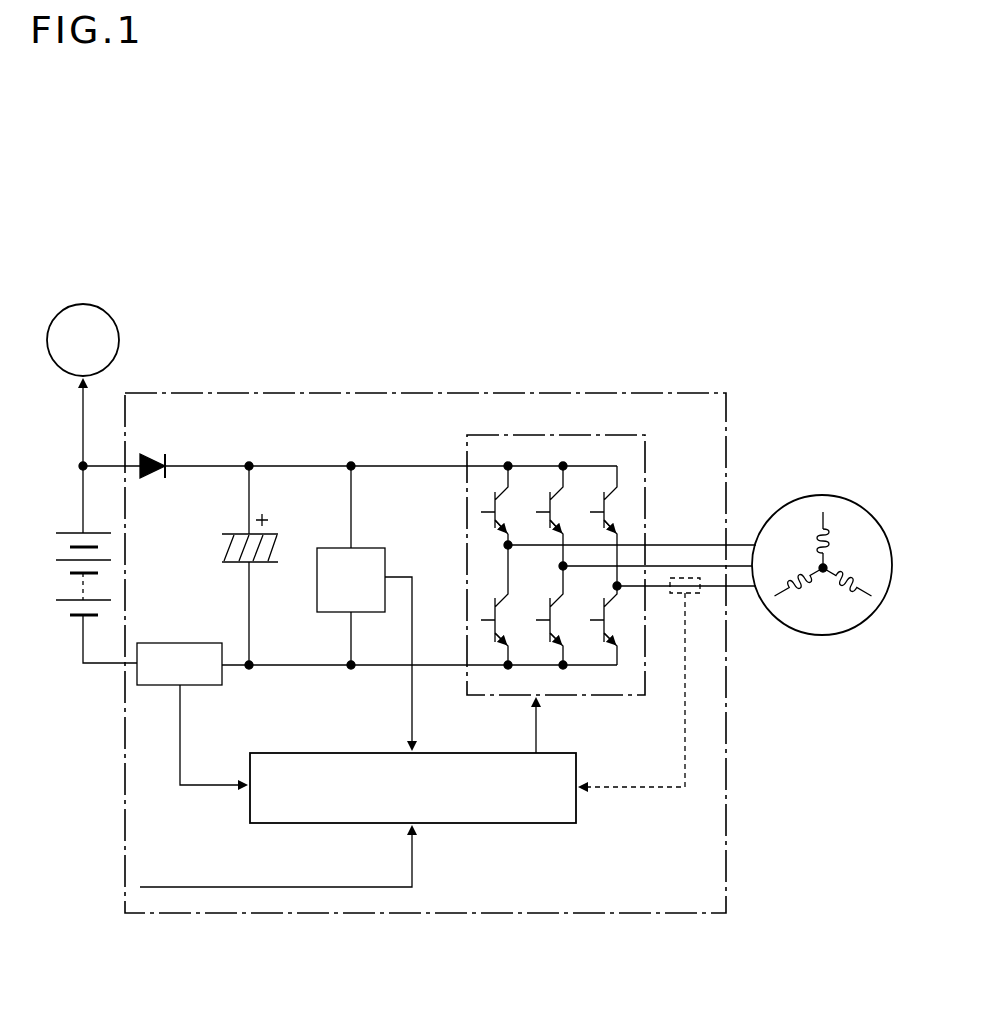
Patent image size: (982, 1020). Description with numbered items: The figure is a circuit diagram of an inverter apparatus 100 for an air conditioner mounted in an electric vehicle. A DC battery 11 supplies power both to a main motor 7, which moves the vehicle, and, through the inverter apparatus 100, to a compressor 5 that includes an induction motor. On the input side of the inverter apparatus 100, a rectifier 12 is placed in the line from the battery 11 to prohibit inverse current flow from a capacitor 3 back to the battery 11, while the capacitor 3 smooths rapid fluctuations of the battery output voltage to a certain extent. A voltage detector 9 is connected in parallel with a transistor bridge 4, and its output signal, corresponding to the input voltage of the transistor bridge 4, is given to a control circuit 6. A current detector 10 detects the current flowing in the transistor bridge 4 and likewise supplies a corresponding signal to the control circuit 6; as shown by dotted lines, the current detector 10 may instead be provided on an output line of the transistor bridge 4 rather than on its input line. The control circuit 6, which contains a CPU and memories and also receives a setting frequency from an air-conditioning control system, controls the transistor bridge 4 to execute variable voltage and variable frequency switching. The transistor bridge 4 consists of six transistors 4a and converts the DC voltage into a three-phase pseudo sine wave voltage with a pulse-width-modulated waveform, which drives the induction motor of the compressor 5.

The inverter apparatus 100 is at (455, 393).
The main motor 7 is at (120, 326).
The DC battery 11 is at (67, 609).
The rectifier 12 is at (153, 460).
The capacitor 3 is at (279, 526).
The voltage detector 9 is at (385, 556).
The current detector 10 is at (193, 687).
The control circuit 6 is at (550, 823).
The transistor bridge 4 is at (540, 549).
The transistor 4a is at (613, 512).
The compressor 5 is at (777, 507).